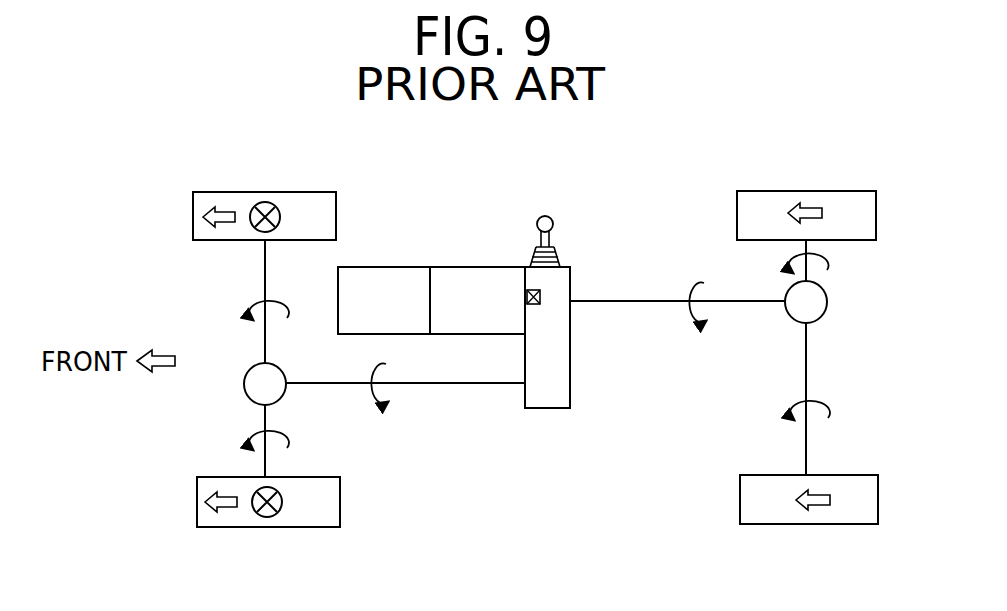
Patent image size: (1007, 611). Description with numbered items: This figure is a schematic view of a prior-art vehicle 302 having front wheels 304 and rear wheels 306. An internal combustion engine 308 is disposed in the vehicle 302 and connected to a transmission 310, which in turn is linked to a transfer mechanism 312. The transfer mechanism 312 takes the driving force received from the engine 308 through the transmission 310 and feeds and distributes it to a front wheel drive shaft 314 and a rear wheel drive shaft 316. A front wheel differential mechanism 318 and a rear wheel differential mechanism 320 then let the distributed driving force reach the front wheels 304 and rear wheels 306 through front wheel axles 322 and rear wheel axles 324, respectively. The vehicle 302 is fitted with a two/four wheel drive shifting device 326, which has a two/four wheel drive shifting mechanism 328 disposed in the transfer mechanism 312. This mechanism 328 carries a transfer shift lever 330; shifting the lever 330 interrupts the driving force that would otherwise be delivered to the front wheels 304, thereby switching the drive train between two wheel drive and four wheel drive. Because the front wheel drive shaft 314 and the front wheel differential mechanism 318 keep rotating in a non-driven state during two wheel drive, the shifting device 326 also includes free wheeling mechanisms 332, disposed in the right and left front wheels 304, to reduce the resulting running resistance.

The vehicle 302 is at (626, 172).
The front wheels 304 is at (212, 192).
The rear wheels 306 is at (834, 192).
The internal combustion engine 308 is at (384, 278).
The transmission 310 is at (456, 278).
The transfer mechanism 312 is at (572, 378).
The front wheel drive shaft 314 is at (465, 385).
The rear wheel drive shaft 316 is at (660, 300).
The front wheel differential mechanism 318 is at (260, 395).
The rear wheel differential mechanism 320 is at (812, 310).
The front wheel axles 322 is at (265, 266).
The rear wheel axles 324 is at (812, 276).
The two/four wheel drive shifting device 326 is at (603, 252).
The two/four wheel drive shifting mechanism 328 is at (530, 289).
The transfer shift lever 330 is at (546, 215).
The free wheeling mechanisms 332 is at (260, 206).